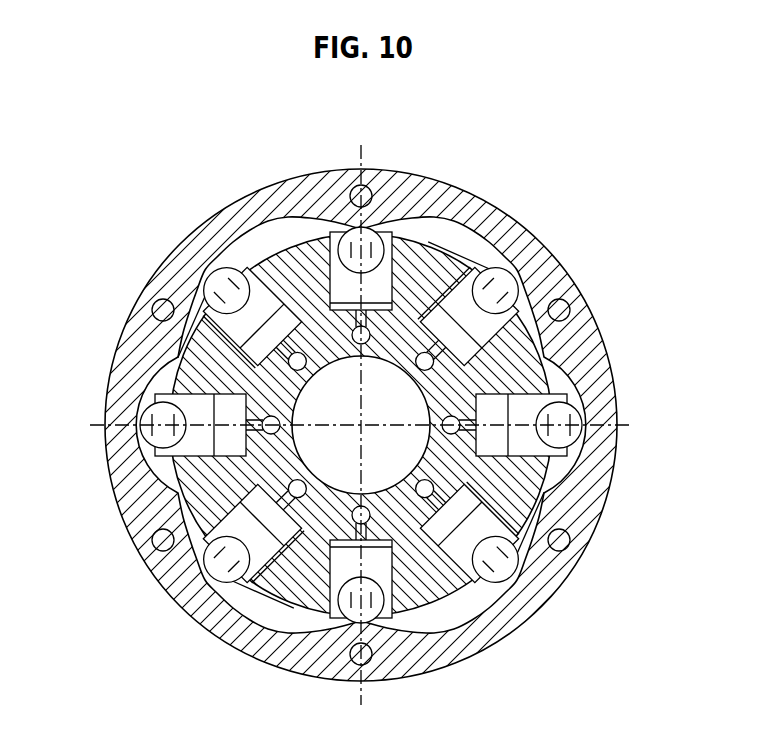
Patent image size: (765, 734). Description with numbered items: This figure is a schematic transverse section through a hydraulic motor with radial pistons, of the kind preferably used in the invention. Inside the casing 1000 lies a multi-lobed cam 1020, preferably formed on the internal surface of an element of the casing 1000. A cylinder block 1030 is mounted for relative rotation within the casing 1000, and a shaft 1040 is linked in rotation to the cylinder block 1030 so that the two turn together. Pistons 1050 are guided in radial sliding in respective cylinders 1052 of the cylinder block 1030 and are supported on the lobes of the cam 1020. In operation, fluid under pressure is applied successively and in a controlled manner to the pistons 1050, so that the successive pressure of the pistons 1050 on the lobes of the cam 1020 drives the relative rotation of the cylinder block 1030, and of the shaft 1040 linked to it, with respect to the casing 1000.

The casing 1000 is at (371, 425).
The multi-lobed cam 1020 is at (607, 440).
The cylinder block 1030 is at (507, 368).
The shaft 1040 is at (385, 436).
The pistons 1050 is at (258, 318).
The cylinders 1052 is at (258, 492).